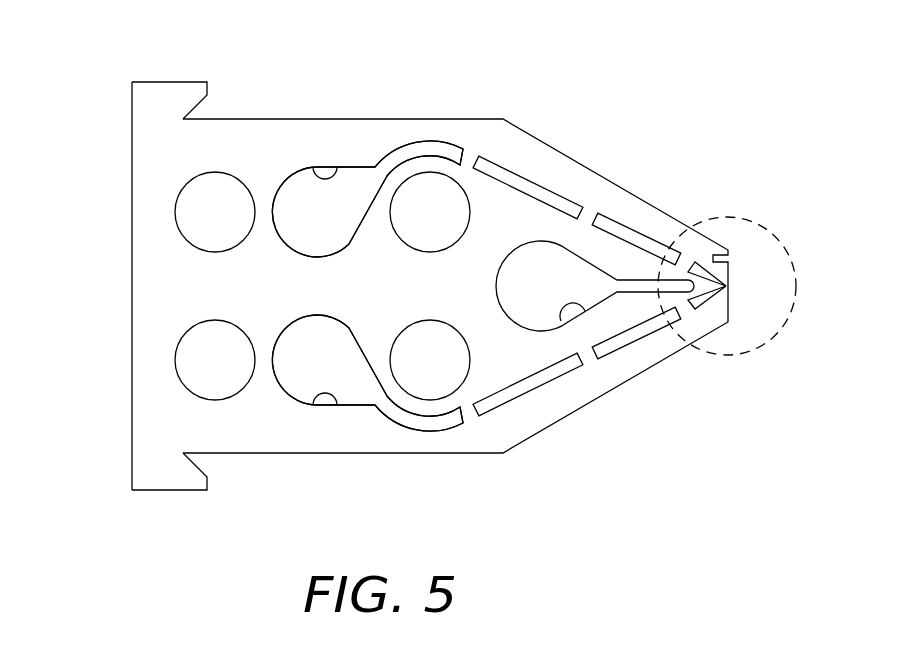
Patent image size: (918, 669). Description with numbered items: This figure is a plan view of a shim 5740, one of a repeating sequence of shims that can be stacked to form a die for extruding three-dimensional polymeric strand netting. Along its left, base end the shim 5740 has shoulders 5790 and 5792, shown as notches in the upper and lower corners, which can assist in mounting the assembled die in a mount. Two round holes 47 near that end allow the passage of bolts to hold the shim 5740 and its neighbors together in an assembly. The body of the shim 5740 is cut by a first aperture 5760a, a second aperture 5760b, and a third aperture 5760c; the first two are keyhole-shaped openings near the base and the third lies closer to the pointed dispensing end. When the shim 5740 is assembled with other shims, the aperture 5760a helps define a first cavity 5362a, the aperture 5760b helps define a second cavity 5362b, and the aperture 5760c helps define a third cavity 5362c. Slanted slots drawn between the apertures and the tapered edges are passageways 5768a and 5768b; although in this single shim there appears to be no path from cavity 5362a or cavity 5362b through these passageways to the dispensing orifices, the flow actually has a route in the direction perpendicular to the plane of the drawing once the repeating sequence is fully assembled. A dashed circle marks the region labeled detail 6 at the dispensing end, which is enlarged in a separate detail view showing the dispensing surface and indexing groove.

The shim 5740 is at (522, 66).
The shoulder 5790 is at (205, 104).
The shoulder 5792 is at (205, 468).
The first aperture 5760a is at (333, 178).
The second aperture 5760b is at (328, 394).
The third aperture 5760c is at (597, 290).
The first cavity 5362a is at (302, 208).
The second cavity 5362b is at (302, 360).
The third cavity 5362c is at (662, 332).
The holes 47 is at (207, 340).
The passageway 5768a is at (538, 188).
The passageway 5768b is at (530, 385).
The detail 6 is at (784, 239).